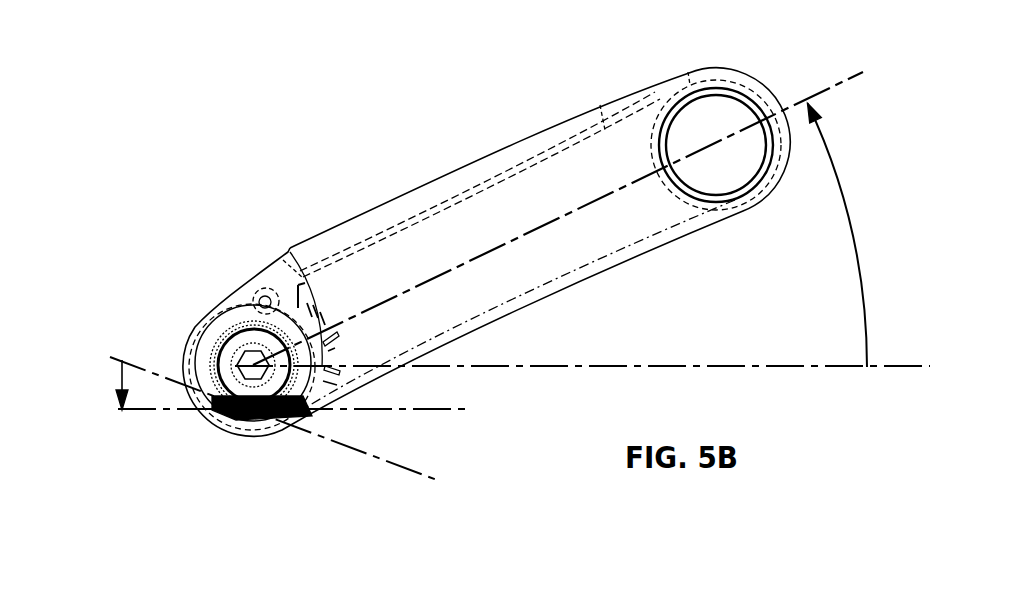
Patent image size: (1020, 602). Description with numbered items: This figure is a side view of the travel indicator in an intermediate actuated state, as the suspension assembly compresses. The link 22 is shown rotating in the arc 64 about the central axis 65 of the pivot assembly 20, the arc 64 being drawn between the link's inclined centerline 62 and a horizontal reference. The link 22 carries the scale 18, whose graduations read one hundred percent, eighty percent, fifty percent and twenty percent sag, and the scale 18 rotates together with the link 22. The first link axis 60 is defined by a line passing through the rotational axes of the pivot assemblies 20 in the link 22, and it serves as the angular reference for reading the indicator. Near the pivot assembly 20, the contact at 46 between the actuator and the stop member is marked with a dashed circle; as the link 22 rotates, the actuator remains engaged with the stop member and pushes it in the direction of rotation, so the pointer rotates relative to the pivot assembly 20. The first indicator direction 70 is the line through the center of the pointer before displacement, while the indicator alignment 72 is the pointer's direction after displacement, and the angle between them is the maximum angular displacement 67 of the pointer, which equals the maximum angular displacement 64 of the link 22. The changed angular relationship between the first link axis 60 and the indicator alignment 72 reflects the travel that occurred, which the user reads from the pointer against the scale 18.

The link 22 is at (505, 146).
The scale 18 is at (312, 270).
The contact 46 is at (264, 290).
The central axis 65 is at (253, 365).
The pivot assembly 20 is at (228, 365).
The crank arm axis 62 is at (843, 80).
The first link axis 60 is at (900, 363).
The arc 64 is at (850, 207).
The first indicator direction 70 is at (405, 468).
The indicator alignment 72 is at (133, 413).
The maximum angular displacement 67 is at (118, 379).